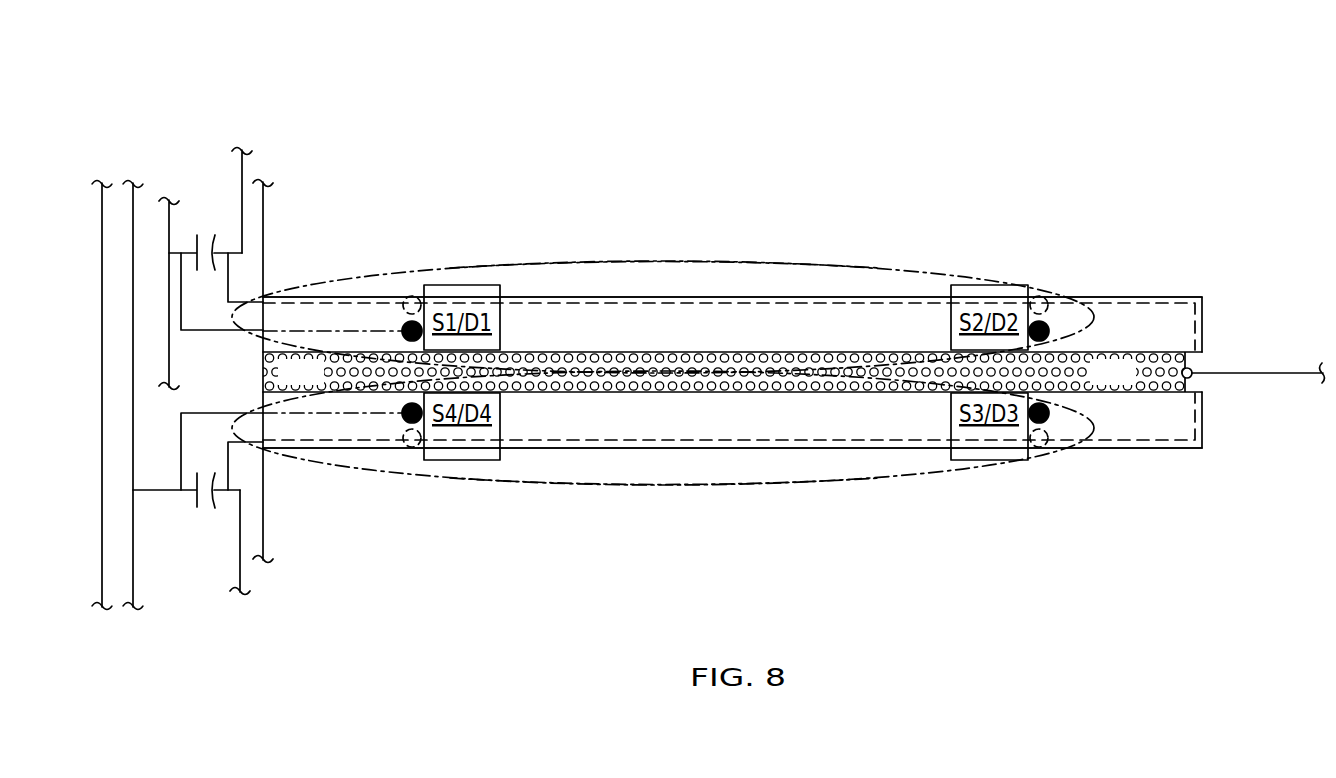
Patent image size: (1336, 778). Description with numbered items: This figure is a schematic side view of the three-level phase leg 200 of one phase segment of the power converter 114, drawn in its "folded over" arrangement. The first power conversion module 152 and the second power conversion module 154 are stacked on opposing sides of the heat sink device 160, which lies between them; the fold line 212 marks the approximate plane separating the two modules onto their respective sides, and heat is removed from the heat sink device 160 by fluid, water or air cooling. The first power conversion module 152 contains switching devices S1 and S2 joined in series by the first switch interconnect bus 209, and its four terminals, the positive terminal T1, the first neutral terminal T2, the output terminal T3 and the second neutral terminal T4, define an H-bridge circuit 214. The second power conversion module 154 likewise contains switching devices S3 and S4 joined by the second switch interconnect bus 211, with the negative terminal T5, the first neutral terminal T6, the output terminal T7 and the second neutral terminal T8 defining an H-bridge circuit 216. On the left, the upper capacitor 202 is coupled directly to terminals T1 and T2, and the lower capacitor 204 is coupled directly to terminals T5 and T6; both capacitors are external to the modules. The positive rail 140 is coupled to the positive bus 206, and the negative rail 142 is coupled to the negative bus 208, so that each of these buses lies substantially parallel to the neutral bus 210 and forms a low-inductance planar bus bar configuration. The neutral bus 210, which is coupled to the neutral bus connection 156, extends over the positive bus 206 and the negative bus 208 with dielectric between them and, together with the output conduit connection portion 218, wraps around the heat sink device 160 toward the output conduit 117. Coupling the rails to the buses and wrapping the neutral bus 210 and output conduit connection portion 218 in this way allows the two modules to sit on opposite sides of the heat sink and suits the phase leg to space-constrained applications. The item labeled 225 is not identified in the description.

The power converter 114 is at (235, 103).
The output conduit 117 is at (1296, 378).
The positive rail 140 is at (169, 350).
The negative rail 142 is at (133, 523).
The first power conversion module 152 is at (815, 222).
The second power conversion module 154 is at (427, 535).
The neutral bus connection 156 is at (276, 578).
The heat sink device 160 is at (756, 357).
The three-level phase leg 200 is at (570, 210).
The upper capacitor 202 is at (206, 247).
The lower capacitor 204 is at (205, 508).
The positive bus 206 is at (302, 315).
The negative bus 208 is at (300, 428).
The first switch interconnect bus 209 is at (672, 322).
The neutral bus 210 is at (1200, 318).
The second switch interconnect bus 211 is at (672, 410).
The fold line 212 is at (1195, 378).
The H-bridge circuit 214 is at (648, 262).
The H-bridge circuit 216 is at (662, 485).
The output conduit connection portion 218 is at (1135, 366).
The coupling circuit 225 is at (208, 177).
The positive terminal T1 is at (403, 328).
The first neutral terminal T2 is at (403, 300).
The output terminal T3 is at (1050, 328).
The second neutral terminal T4 is at (1044, 298).
The negative terminal T5 is at (403, 416).
The first neutral terminal T6 is at (403, 445).
The output terminal T7 is at (1050, 416).
The second neutral terminal T8 is at (1044, 447).